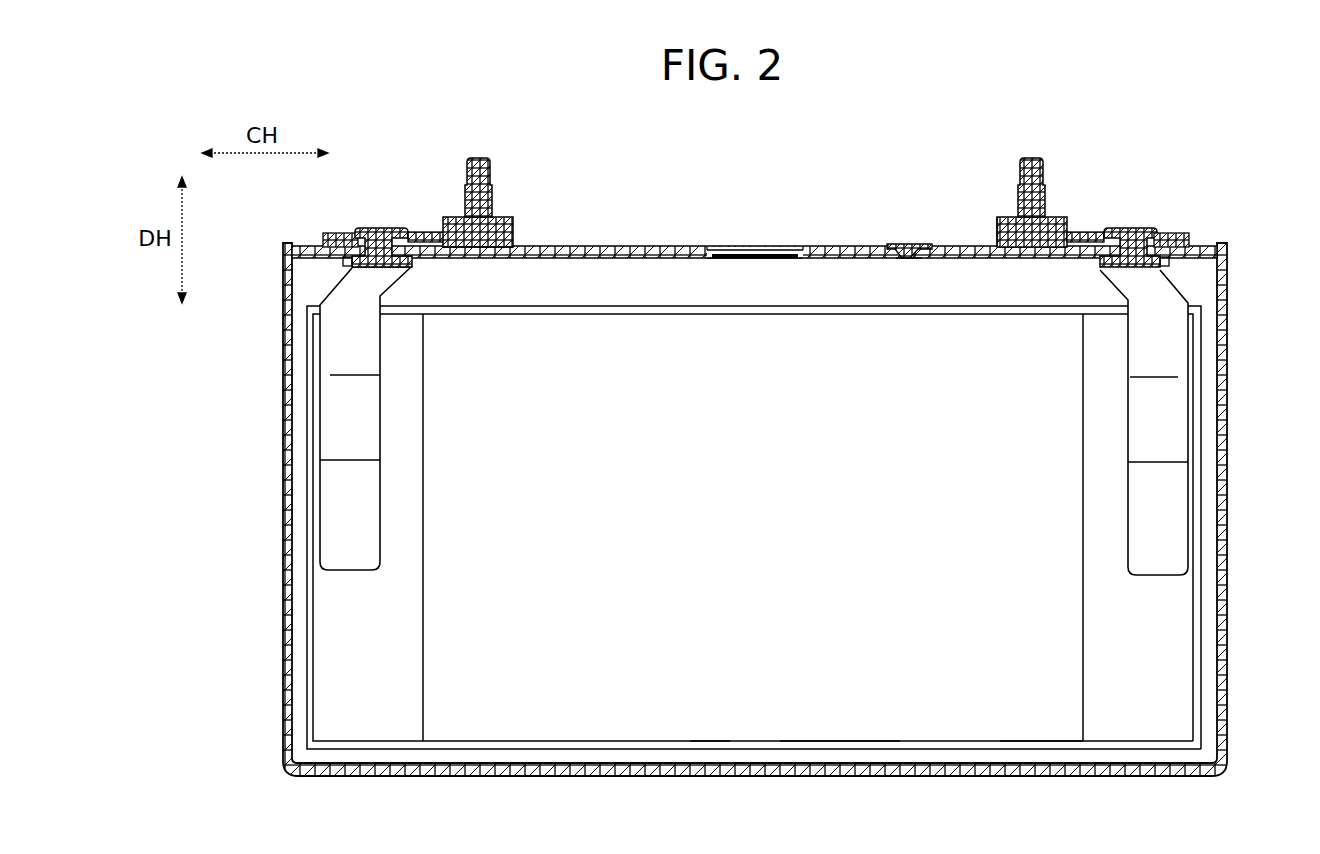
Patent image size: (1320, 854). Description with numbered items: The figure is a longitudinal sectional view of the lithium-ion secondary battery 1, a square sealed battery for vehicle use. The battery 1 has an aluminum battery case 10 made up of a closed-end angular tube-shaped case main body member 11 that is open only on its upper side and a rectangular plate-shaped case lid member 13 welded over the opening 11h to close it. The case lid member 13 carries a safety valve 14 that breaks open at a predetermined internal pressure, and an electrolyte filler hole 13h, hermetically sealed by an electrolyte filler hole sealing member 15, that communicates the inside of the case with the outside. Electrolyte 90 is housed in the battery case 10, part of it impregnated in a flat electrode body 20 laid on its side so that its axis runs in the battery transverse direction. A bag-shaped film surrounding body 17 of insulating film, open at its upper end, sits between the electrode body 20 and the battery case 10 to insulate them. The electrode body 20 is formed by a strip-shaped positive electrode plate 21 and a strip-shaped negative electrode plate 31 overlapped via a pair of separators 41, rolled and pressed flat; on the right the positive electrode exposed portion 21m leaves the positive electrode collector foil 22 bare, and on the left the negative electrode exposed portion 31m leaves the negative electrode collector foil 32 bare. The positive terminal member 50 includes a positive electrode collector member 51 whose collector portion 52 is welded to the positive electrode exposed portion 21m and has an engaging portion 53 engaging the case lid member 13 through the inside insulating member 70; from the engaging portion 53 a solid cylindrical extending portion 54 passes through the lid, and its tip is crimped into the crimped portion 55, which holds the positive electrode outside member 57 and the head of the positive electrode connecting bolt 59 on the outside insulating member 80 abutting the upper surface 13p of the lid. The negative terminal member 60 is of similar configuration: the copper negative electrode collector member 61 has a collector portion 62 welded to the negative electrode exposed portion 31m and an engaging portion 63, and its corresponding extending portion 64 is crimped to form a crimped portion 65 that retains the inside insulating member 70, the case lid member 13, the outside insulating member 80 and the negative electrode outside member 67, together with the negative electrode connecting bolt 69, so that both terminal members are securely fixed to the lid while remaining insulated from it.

The battery 1 is at (1160, 193).
The battery case 10 is at (510, 777).
The case main body member 11 is at (371, 777).
The opening 11h is at (1227, 243).
The case lid member 13 is at (592, 246).
The upper surface 13p is at (650, 249).
The electrolyte filler hole 13h is at (908, 259).
The safety valve 14 is at (740, 252).
The electrolyte filler hole sealing member 15 is at (910, 245).
The film surrounding body 17 is at (824, 306).
The electrode body 20 is at (1027, 703).
The positive electrode plate 21 is at (1180, 620).
The positive electrode exposed portion 21m is at (1178, 658).
The positive electrode collector foil 22 is at (1177, 693).
The negative electrode plate 31 is at (332, 608).
The negative electrode exposed portion 31m is at (332, 643).
The negative electrode collector foil 32 is at (332, 677).
The separators 41 is at (841, 703).
The positive terminal member 50 is at (1085, 218).
The positive electrode collector member 51 is at (1188, 340).
The collector portion 52 is at (1160, 415).
The engaging portion 53 is at (1140, 275).
The extending portion 54 is at (1165, 236).
The crimped portion 55 is at (1118, 232).
The positive electrode outside member 57 is at (1070, 214).
The positive electrode connecting bolt 59 is at (1022, 200).
The negative terminal member 60 is at (440, 214).
The negative electrode collector member 61 is at (330, 345).
The collector portion 62 is at (330, 425).
The engaging portion 63 is at (386, 270).
The negative rivet 64 is at (380, 240).
The crimped portion 65 is at (347, 233).
The negative electrode outside member 67 is at (447, 216).
The negative electrode connecting bolt 69 is at (490, 198).
The inside insulating member 70 is at (345, 262).
The outside insulating member 80 is at (513, 238).
The electrolyte 90 is at (714, 695).